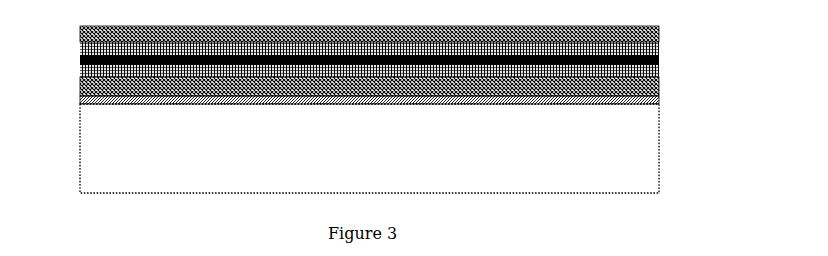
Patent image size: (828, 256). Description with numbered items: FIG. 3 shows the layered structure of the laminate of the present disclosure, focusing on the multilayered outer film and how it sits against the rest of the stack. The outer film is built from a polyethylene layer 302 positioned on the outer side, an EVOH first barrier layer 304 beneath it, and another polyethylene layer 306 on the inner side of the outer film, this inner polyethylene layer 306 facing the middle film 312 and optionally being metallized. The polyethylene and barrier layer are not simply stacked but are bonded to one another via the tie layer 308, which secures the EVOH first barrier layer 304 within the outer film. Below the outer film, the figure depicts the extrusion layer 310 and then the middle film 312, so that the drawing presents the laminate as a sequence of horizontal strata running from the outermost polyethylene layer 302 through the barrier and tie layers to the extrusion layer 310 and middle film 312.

The polyethylene layer 302 is at (659, 35).
The EVOH first barrier layer 304 is at (659, 58).
The polyethylene layer 306 is at (659, 85).
The tie layer 308 is at (80, 49).
The extrusion layer 310 is at (83, 99).
The middle film 312 is at (645, 150).